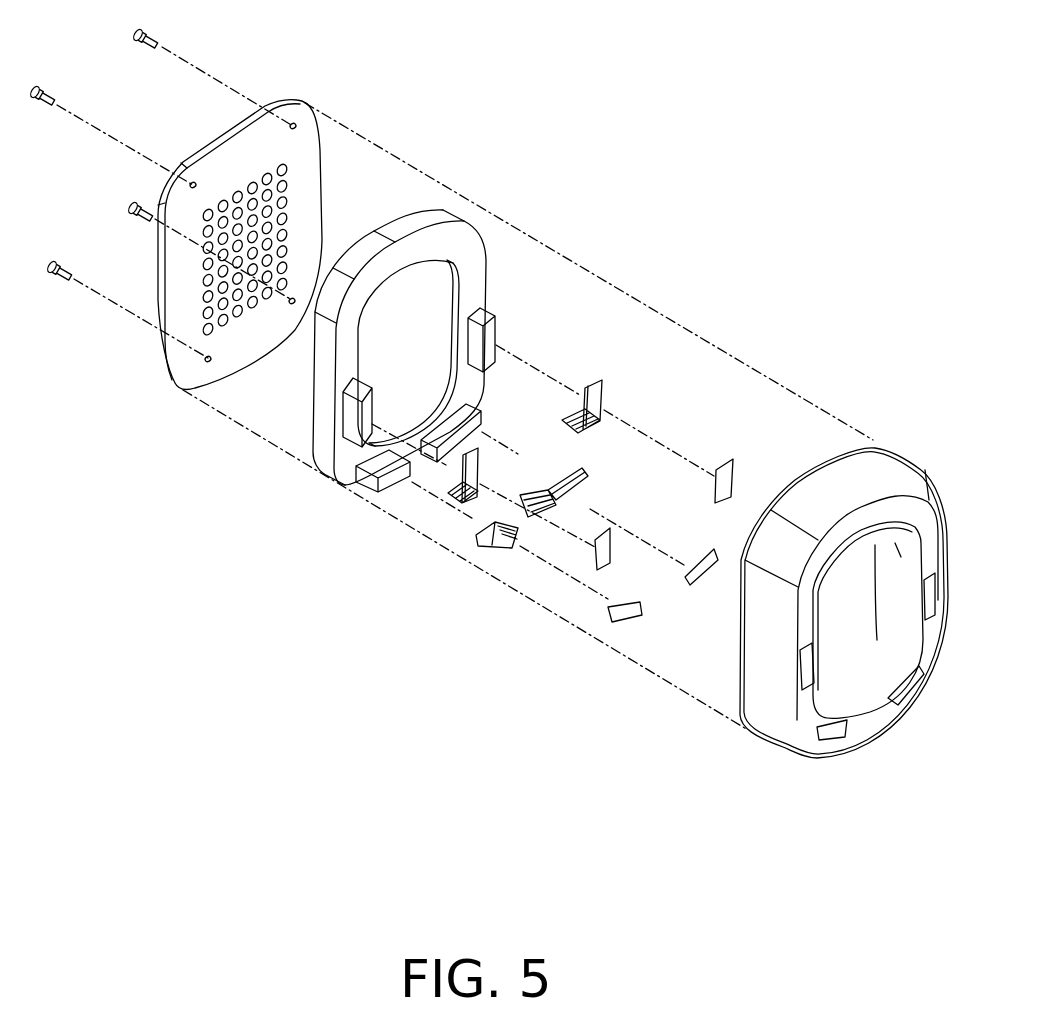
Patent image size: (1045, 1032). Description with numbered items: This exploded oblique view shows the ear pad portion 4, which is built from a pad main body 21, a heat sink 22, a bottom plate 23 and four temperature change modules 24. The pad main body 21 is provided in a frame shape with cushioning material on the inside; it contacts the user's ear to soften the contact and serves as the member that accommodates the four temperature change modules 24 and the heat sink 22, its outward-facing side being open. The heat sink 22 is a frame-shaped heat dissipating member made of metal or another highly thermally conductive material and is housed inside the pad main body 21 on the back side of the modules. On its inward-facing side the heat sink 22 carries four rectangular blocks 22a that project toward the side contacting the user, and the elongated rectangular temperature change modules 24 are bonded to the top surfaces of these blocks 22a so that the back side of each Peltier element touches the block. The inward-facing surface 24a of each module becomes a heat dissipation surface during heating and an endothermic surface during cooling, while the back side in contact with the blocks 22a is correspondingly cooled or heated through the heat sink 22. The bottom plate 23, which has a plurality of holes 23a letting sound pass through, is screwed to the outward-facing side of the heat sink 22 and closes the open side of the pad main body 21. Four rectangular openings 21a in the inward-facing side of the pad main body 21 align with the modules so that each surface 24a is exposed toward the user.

The ear pad portion 4 is at (724, 64).
The pad main body 21 is at (768, 718).
The openings 21a is at (925, 470).
The heat sink 22 is at (333, 458).
The blocks 22a is at (347, 408).
The bottom plate 23 is at (205, 372).
The holes 23a is at (284, 216).
The temperature change modules 24 is at (603, 398).
The surface 24a is at (603, 388).